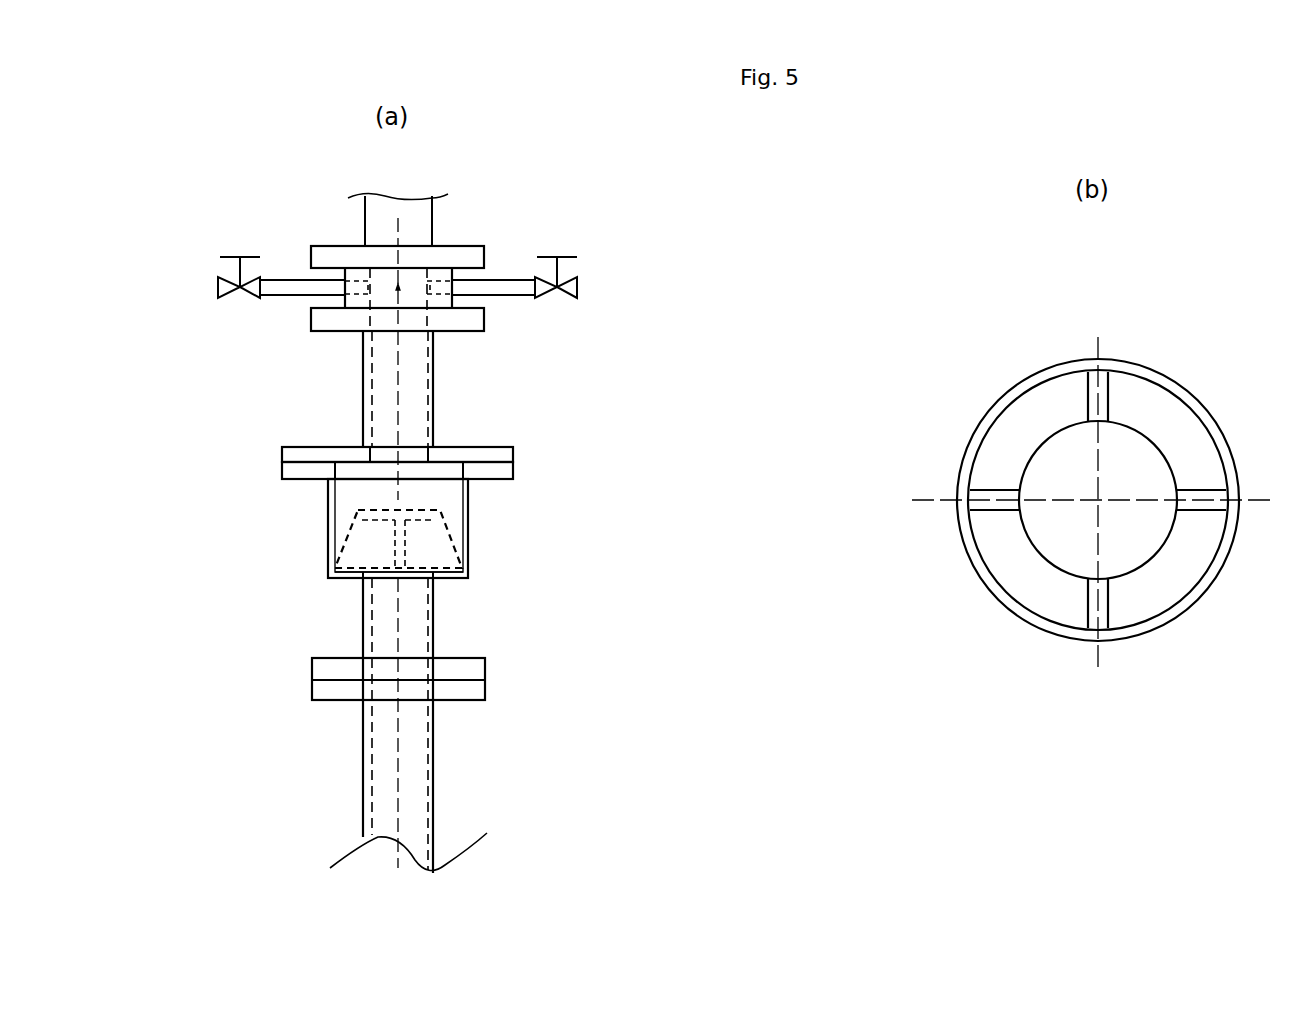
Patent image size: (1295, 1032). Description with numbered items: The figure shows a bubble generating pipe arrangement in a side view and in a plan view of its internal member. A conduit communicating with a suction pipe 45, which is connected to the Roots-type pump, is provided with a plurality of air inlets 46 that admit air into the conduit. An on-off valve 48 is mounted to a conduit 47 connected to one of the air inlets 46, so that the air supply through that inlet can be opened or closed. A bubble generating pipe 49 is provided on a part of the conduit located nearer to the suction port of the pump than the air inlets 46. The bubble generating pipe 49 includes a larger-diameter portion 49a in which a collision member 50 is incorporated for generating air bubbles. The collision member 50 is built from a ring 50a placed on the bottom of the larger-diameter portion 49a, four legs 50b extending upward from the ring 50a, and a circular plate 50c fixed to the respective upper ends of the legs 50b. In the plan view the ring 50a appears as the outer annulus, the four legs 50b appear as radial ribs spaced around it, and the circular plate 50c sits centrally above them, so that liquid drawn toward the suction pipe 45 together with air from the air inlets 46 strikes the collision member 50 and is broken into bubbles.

The suction pipe 45 is at (423, 790).
The air inlets 46 is at (363, 286).
The gas supply pipe 47 is at (498, 286).
The on-off valve 48 is at (570, 255).
The bubble generating pipe 49 is at (332, 528).
The larger-diameter portion 49a is at (468, 548).
The collision member 50 is at (442, 523).
The ring 50a is at (977, 450).
The legs 50b is at (997, 503).
The circular plate 50c is at (1055, 455).